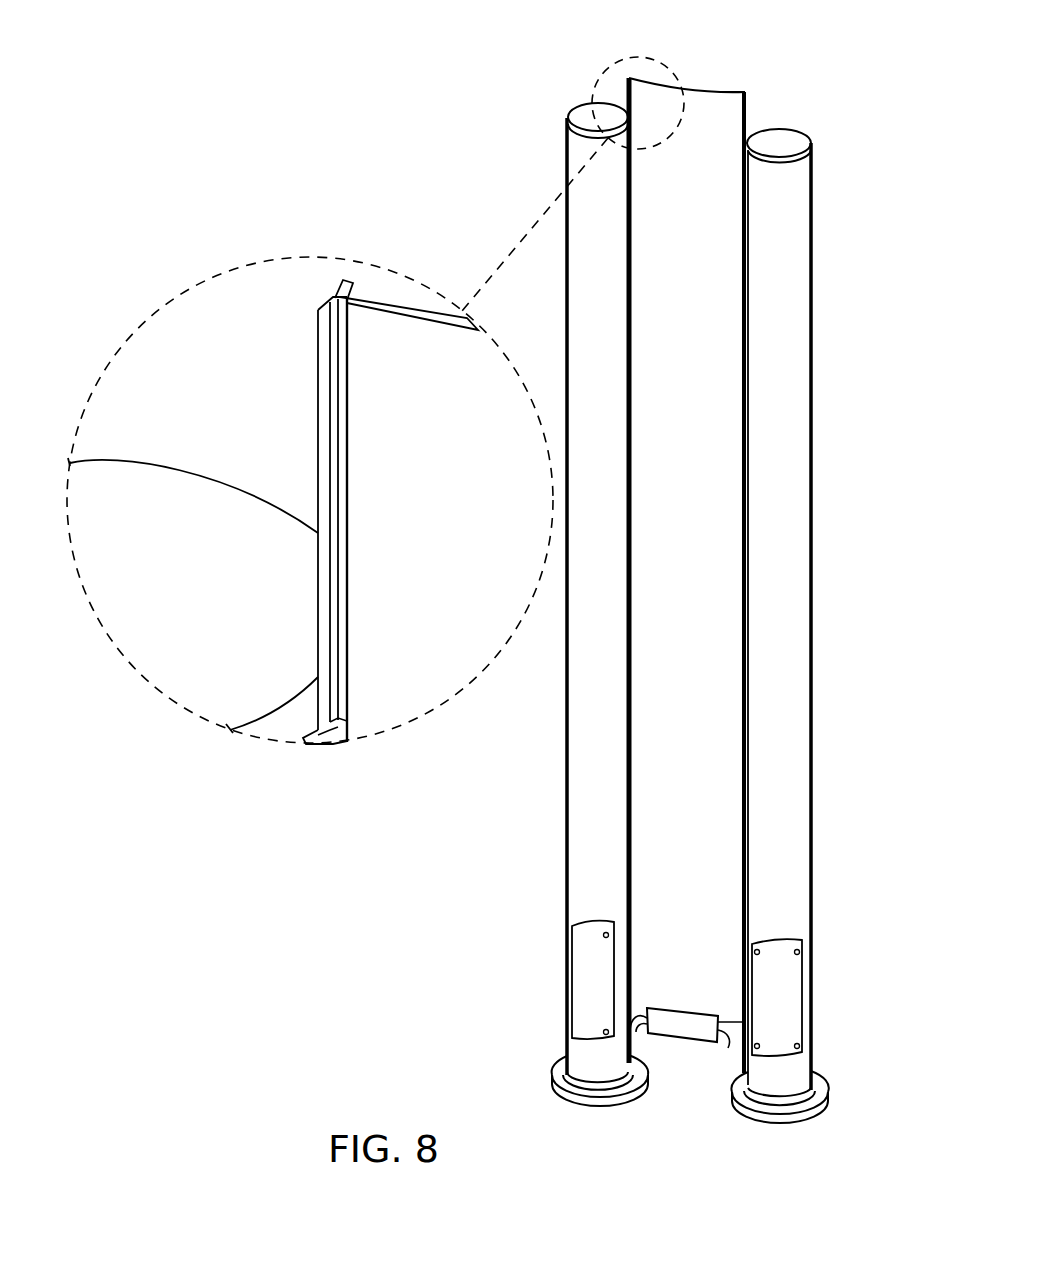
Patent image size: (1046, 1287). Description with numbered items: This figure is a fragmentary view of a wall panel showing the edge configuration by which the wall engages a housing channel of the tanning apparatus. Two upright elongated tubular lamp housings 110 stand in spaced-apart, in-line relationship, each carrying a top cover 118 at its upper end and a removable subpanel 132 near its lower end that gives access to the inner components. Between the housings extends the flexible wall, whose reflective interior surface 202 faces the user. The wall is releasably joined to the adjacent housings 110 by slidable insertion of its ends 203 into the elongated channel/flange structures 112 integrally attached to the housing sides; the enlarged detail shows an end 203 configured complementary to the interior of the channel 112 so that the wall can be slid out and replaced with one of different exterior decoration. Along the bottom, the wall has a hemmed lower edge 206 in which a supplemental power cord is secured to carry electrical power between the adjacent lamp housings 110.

The elongated tubular lamp housing 110 is at (783, 582).
The channel/flange structure 112 is at (327, 742).
The top cover 118 is at (167, 503).
The subpanel 132 is at (783, 983).
The reflective interior surface 202 is at (703, 90).
The wall end 203 is at (318, 438).
The hemmed lower edge 206 is at (683, 1033).